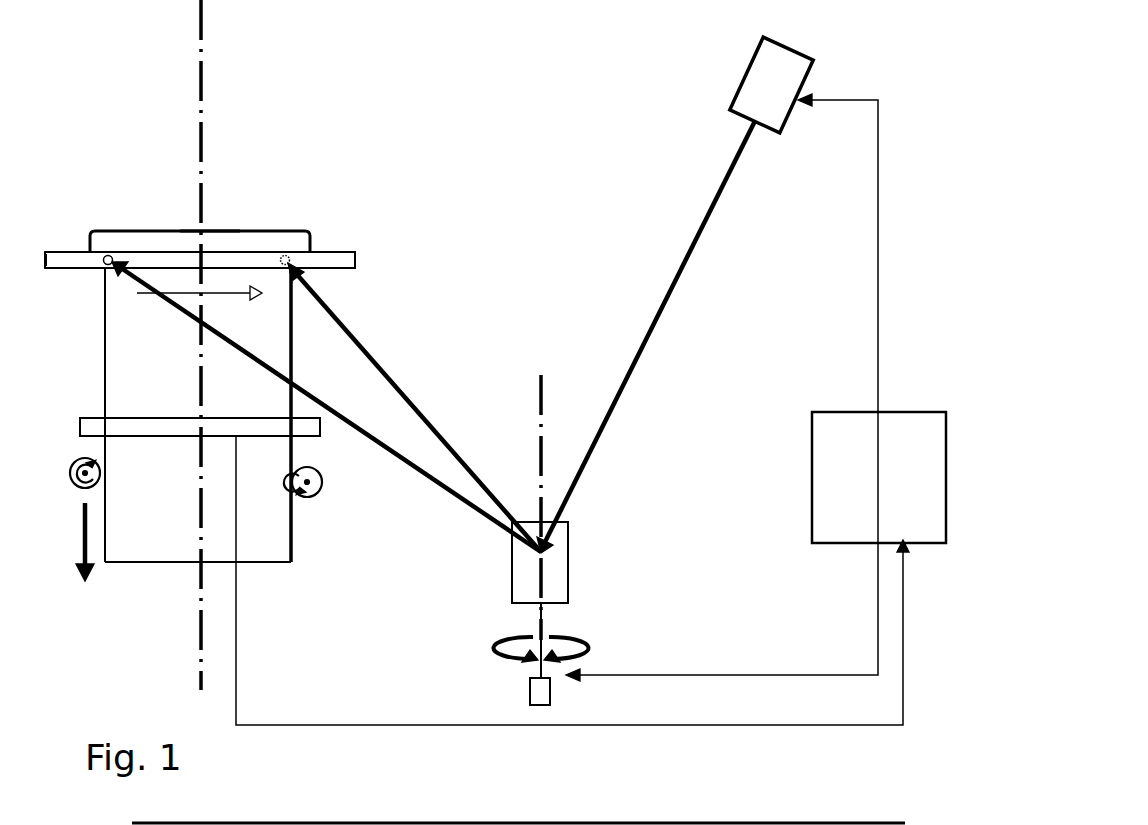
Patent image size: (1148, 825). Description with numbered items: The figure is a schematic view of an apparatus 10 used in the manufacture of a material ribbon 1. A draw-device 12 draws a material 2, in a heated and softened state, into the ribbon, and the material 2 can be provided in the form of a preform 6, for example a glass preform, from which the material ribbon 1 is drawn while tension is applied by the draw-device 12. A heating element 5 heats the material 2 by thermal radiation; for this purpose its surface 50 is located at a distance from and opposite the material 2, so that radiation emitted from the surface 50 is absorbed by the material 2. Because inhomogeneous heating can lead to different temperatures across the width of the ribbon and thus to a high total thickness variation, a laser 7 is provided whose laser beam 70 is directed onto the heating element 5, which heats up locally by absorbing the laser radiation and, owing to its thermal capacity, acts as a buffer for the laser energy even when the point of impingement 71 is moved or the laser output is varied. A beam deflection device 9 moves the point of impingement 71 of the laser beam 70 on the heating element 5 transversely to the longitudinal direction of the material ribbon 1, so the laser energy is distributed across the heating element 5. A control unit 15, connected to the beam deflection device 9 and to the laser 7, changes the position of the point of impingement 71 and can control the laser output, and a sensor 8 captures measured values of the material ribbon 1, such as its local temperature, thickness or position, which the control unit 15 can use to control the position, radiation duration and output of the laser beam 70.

The material ribbon 1 is at (270, 520).
The material 2 is at (258, 236).
The heating element 5 is at (340, 252).
The preform 6 is at (228, 232).
The laser 7 is at (740, 82).
The sensor 8 is at (90, 418).
The beam deflection device 9 is at (568, 568).
The apparatus 10 is at (442, 158).
The draw-device 12 is at (325, 484).
The control unit 15 is at (925, 411).
The surface 50 is at (56, 256).
The laser beam 70 is at (700, 218).
The point of impingement 71 is at (108, 253).